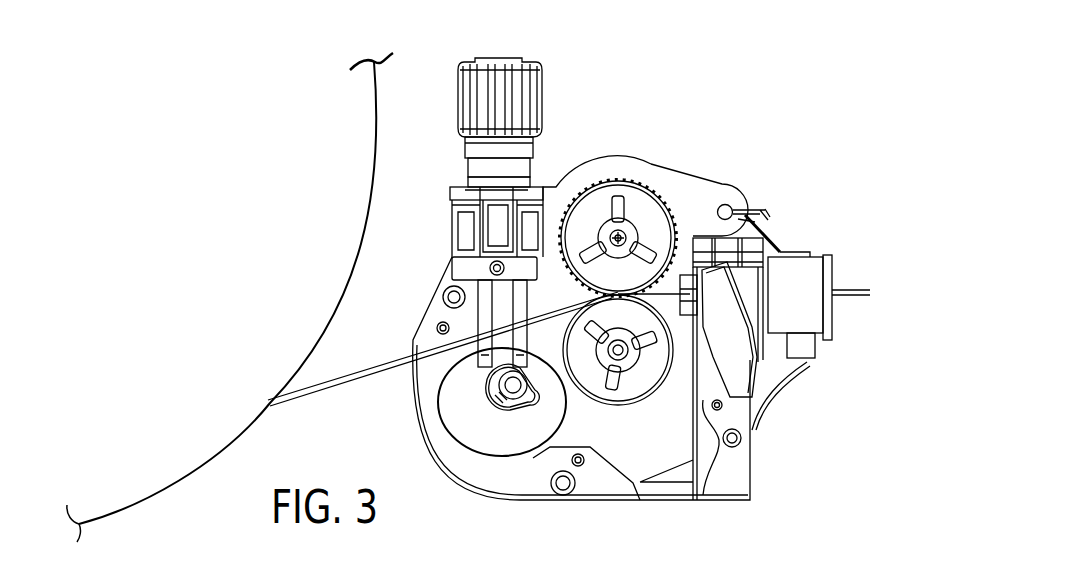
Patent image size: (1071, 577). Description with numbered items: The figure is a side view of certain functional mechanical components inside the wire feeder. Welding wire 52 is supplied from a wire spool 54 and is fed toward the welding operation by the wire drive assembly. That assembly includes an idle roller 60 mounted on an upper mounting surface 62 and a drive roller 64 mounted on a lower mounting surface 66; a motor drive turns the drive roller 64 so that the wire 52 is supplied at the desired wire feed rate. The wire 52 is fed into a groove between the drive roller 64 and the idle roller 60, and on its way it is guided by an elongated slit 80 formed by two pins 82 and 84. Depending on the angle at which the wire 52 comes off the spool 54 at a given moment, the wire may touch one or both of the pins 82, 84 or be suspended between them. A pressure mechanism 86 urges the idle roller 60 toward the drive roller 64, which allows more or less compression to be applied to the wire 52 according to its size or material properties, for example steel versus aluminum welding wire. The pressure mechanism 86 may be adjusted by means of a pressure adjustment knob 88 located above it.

The welding wire 52 is at (353, 383).
The wire spool 54 is at (272, 356).
The idle roller 60 is at (662, 197).
The upper mounting surface 62 is at (462, 269).
The drive roller 64 is at (617, 398).
The lower mounting surface 66 is at (483, 438).
The elongated slit 80 is at (503, 307).
The pin 82 is at (443, 383).
The pin 84 is at (530, 360).
The pressure mechanism 86 is at (618, 162).
The pressure adjustment knob 88 is at (532, 60).